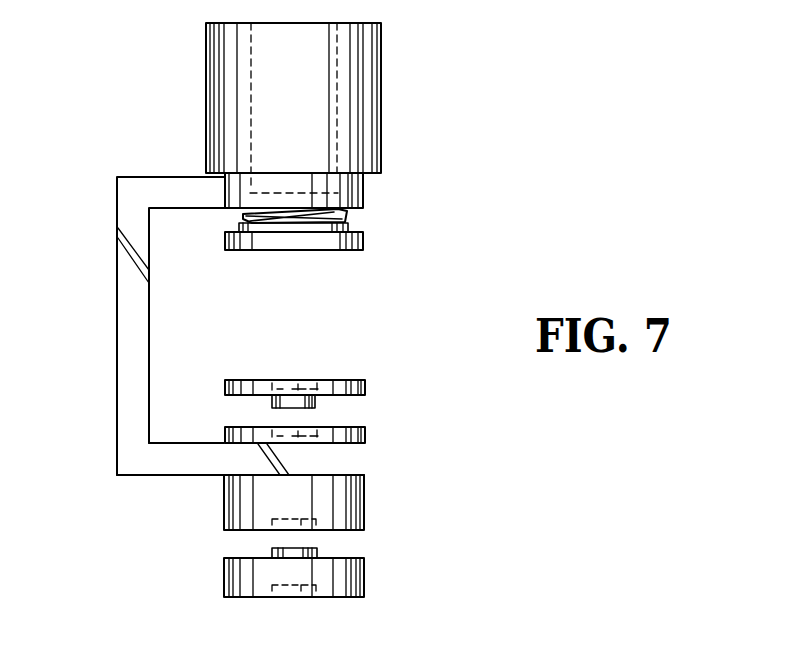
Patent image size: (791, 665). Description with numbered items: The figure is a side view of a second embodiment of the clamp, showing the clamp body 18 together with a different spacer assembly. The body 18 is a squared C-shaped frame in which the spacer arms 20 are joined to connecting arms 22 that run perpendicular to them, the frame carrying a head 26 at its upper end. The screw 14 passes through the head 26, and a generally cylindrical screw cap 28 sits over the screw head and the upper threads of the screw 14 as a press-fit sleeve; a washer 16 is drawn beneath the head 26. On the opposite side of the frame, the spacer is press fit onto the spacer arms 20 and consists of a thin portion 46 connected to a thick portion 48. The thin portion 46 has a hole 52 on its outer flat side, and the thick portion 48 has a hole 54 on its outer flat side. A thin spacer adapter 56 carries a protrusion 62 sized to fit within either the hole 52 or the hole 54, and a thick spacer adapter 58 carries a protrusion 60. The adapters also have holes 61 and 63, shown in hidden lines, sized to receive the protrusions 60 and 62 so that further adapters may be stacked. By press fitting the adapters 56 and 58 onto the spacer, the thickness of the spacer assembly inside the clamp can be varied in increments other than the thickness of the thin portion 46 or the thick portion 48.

The body 18 is at (113, 175).
The connecting arms 22 is at (117, 348).
The spacer arms 20 is at (141, 477).
The screw cap 28 is at (381, 80).
The head 26 is at (363, 188).
The screw 14 is at (345, 212).
The washer 16 is at (363, 238).
The thin spacer adapter 56 is at (238, 380).
The hole 61 is at (298, 382).
The protrusion 62 is at (317, 402).
The thin portion 46 is at (224, 438).
The hole 52 is at (306, 427).
The thick portion 48 is at (365, 503).
The hole 54 is at (303, 530).
The protrusion 60 is at (271, 556).
The thick spacer adapter 58 is at (364, 576).
The hole 63 is at (303, 597).